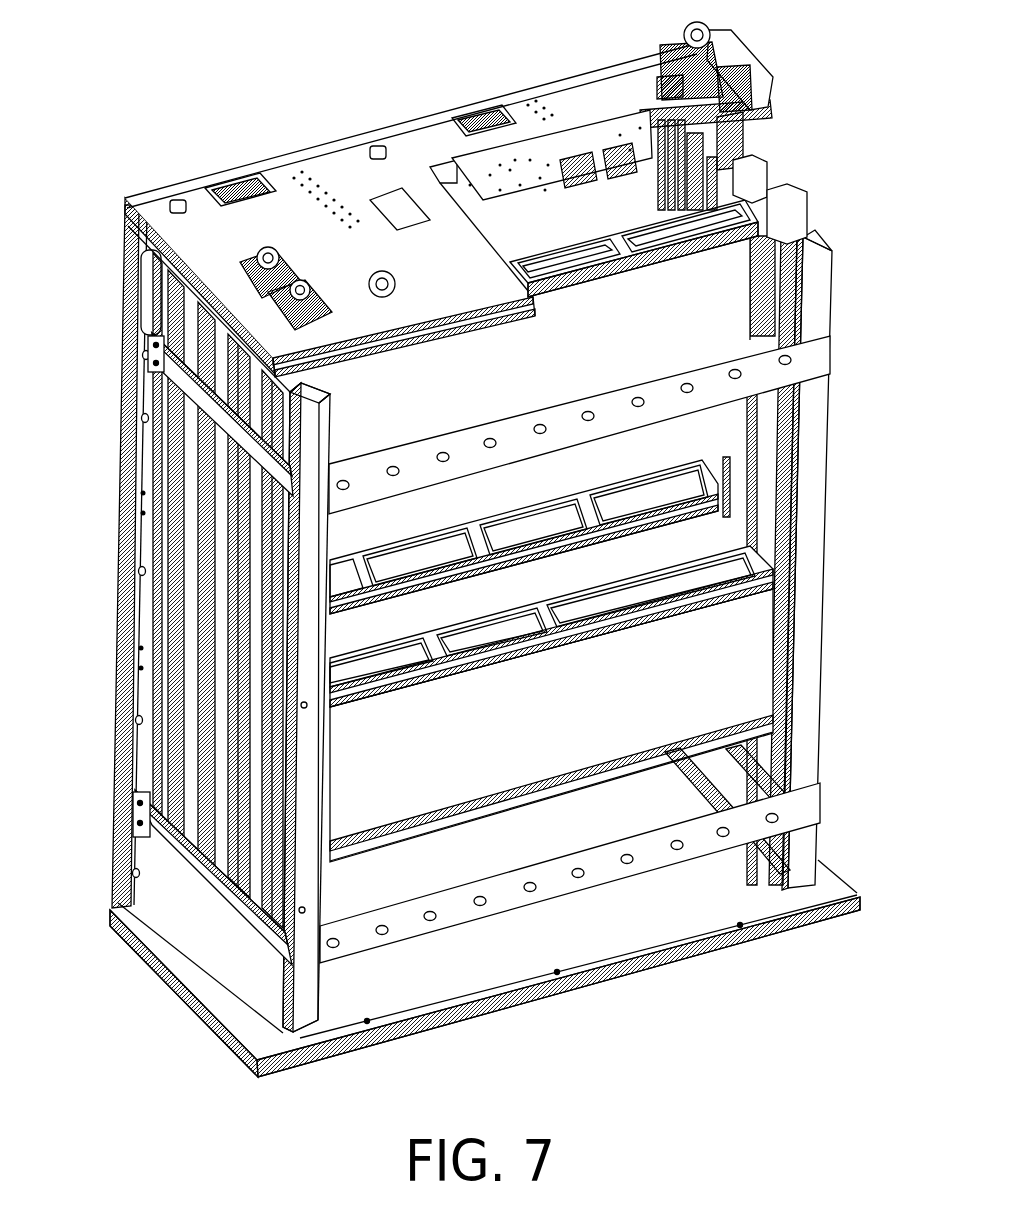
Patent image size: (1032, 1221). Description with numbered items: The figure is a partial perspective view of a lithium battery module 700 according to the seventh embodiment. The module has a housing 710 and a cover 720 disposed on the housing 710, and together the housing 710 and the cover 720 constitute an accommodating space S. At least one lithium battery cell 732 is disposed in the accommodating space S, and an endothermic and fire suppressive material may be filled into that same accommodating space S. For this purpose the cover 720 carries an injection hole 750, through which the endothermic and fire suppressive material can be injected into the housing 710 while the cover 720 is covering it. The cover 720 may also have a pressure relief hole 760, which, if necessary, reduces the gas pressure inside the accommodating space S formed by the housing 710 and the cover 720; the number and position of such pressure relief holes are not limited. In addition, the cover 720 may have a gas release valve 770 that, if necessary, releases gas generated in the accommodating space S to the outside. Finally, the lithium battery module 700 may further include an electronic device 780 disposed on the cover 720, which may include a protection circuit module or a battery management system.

The lithium battery module 700 is at (907, 1121).
The housing 710 is at (118, 597).
The cover 720 is at (585, 93).
The lithium battery cell 732 is at (695, 527).
The injection hole 750 is at (378, 272).
The pressure relief hole 760 is at (178, 200).
The gas release valve 770 is at (395, 203).
The electronic device 780 is at (528, 152).
The accommodating space S is at (719, 766).